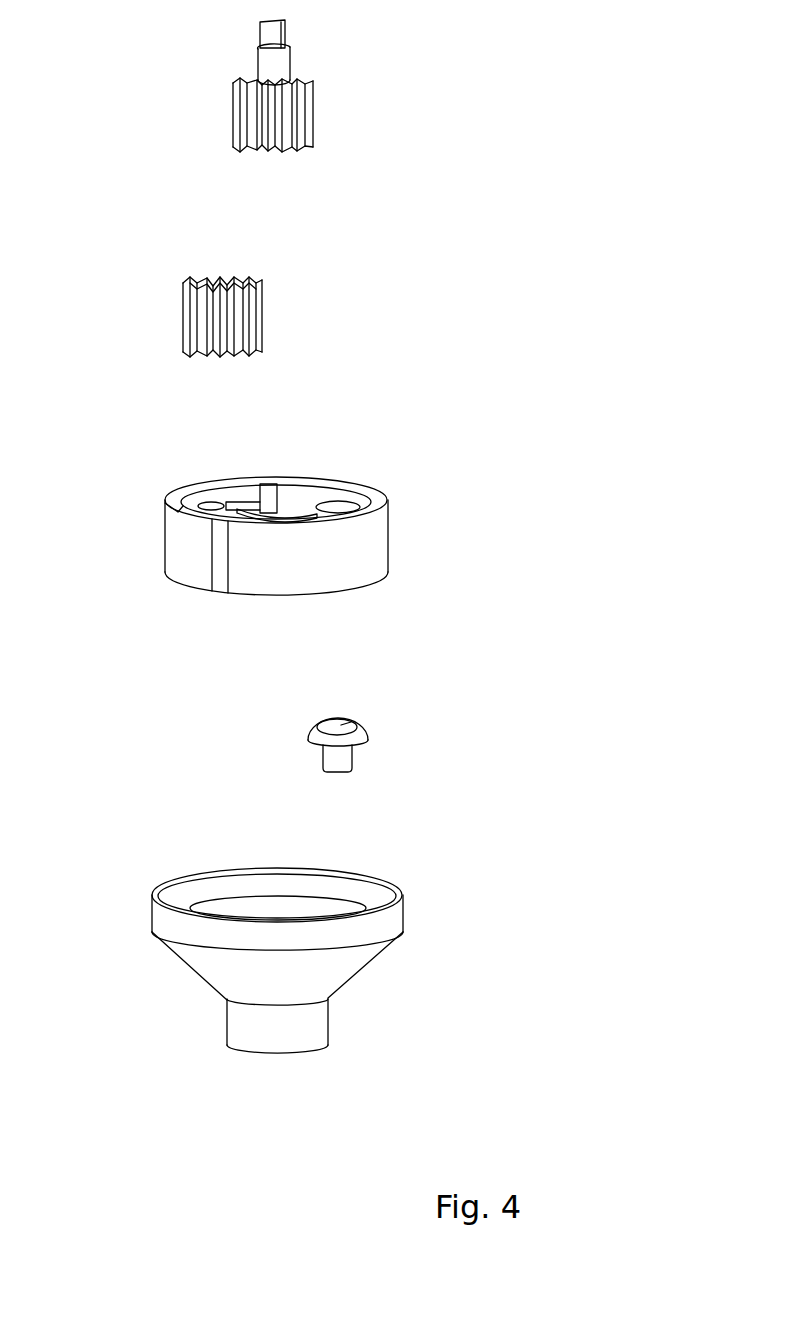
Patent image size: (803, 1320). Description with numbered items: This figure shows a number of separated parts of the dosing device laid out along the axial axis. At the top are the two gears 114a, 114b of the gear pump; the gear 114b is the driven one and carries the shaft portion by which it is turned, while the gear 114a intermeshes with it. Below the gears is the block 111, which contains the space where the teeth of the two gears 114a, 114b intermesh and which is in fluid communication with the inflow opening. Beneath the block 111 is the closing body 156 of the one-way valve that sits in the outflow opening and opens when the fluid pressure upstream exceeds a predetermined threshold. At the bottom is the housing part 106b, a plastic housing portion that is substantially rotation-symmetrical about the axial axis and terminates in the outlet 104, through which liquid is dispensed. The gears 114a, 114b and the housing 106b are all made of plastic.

The gear 114b is at (315, 103).
The gear 114a is at (262, 313).
The block 111 is at (388, 538).
The closing body 156 is at (358, 728).
The housing 106b is at (152, 912).
The outlet 104 is at (295, 1055).